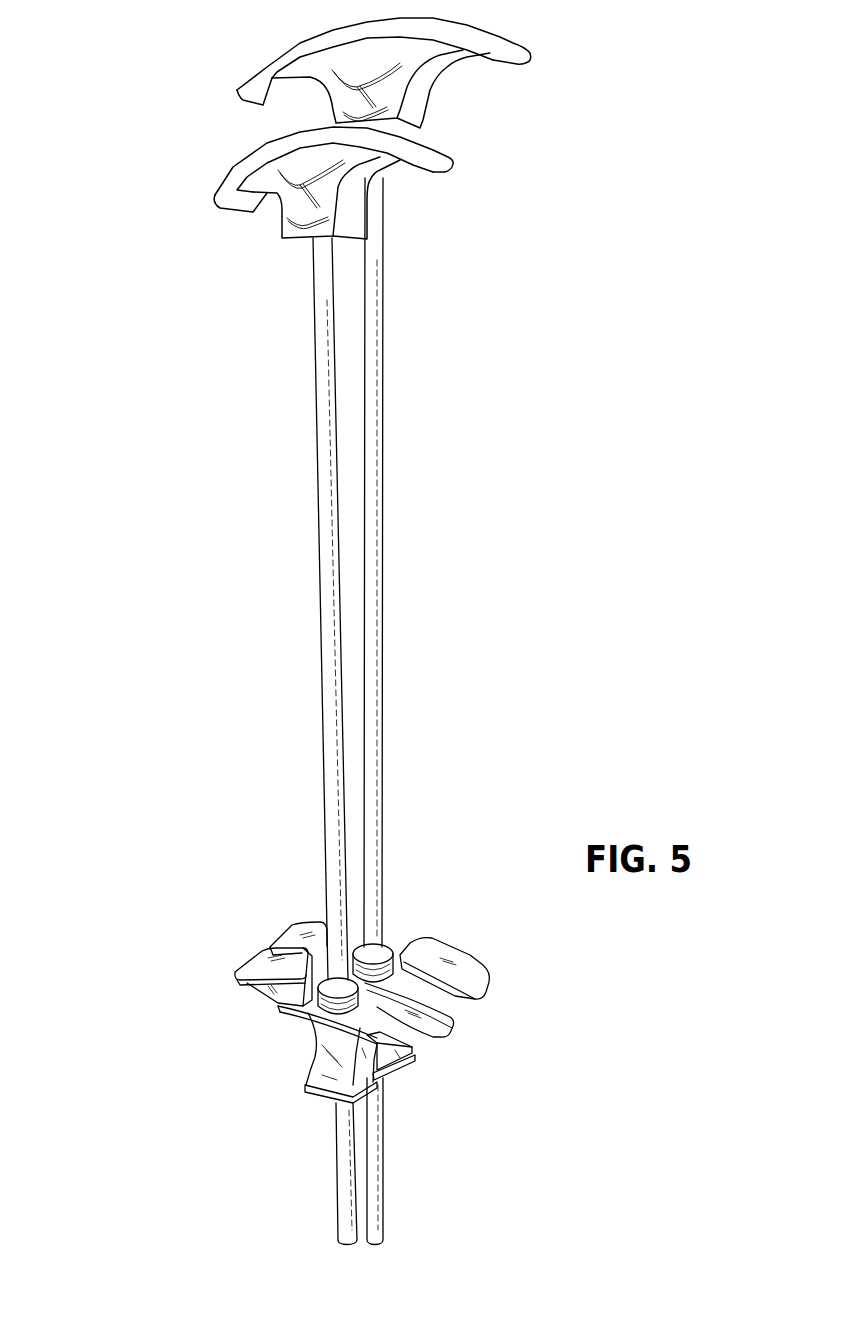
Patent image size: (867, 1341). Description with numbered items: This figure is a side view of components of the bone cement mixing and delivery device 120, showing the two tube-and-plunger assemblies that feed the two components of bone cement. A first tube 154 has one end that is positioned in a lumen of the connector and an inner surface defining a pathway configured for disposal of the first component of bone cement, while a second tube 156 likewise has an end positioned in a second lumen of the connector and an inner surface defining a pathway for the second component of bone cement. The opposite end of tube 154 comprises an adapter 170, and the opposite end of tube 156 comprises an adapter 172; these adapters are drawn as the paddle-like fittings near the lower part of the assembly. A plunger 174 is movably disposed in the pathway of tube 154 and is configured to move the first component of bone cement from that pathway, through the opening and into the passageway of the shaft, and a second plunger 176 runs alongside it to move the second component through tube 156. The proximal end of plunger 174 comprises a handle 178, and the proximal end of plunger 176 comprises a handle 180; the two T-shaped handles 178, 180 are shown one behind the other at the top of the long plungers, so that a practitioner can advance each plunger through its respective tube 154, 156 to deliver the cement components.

The bone cement mixing and delivery device 120 is at (138, 63).
The tube 154 is at (336, 1163).
The tube 156 is at (385, 1113).
The adapter 170 is at (235, 972).
The adapter 172 is at (472, 967).
The plunger 174 is at (308, 522).
The plunger 176 is at (393, 476).
The handle 178 is at (215, 195).
The handle 180 is at (531, 58).